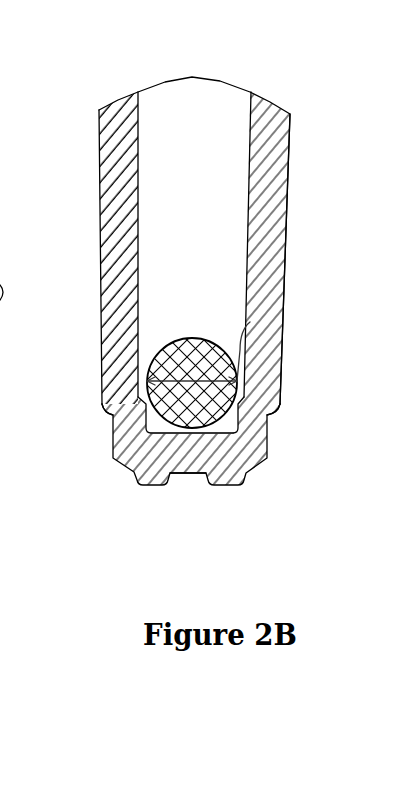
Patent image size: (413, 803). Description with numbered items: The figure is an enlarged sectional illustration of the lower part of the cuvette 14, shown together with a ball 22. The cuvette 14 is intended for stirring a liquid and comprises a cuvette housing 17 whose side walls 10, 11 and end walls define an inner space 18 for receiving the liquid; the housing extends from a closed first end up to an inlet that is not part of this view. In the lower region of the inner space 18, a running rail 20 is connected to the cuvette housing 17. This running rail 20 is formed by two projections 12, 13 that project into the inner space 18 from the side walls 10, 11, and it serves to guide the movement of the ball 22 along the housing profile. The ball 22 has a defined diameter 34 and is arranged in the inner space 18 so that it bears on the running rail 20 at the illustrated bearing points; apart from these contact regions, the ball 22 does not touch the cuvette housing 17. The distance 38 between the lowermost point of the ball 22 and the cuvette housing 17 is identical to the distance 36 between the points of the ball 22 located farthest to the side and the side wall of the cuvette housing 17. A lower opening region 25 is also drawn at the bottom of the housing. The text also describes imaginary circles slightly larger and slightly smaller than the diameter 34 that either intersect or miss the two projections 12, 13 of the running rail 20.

The side wall 10 is at (290, 172).
The side wall 11 is at (98, 208).
The projection 12 is at (280, 383).
The projection 13 is at (115, 459).
The cuvette 14 is at (293, 104).
The cuvette housing 17 is at (290, 262).
The inner space 18 is at (210, 208).
The running rail 20 is at (107, 410).
The ball 22 is at (173, 338).
The bottom opening 25 is at (195, 477).
The diameter 34 is at (147, 381).
The distance 36 is at (250, 322).
The distance 38 is at (213, 433).